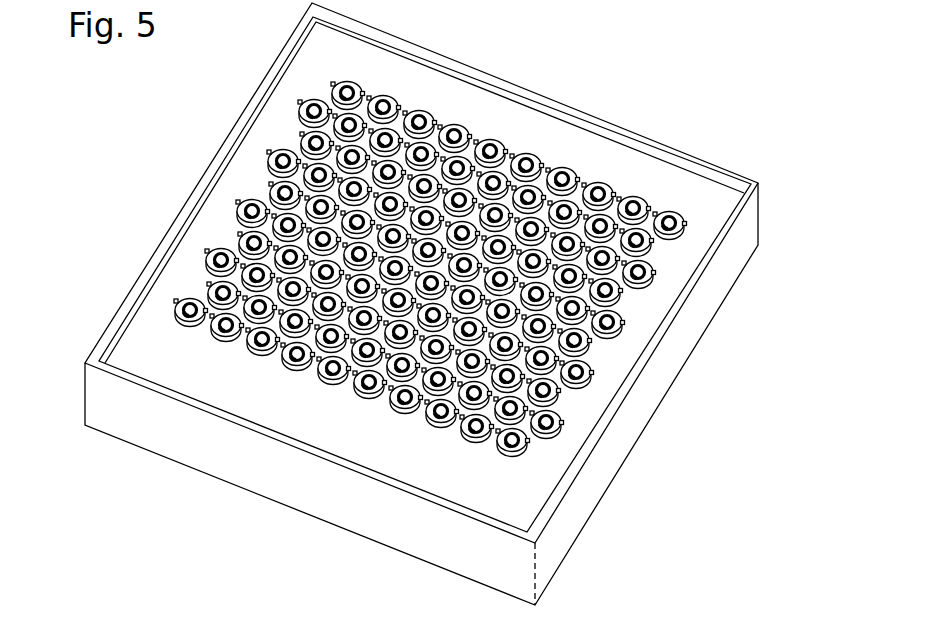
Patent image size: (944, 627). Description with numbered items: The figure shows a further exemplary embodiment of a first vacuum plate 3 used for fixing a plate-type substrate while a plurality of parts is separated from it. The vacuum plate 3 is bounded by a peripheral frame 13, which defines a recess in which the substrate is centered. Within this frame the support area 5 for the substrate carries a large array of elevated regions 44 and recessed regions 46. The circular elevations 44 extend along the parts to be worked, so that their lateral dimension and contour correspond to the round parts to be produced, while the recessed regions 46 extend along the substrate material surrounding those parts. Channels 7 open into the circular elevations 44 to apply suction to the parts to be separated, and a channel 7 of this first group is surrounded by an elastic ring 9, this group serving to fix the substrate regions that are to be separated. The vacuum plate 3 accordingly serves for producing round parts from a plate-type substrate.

The vacuum plate 3 is at (604, 66).
The peripheral frame 13 is at (490, 77).
The support area 5 is at (640, 187).
The elastic ring 9 is at (176, 300).
The recessed region 46 is at (272, 362).
The channel 7 is at (398, 410).
The elevated region 44 is at (524, 455).